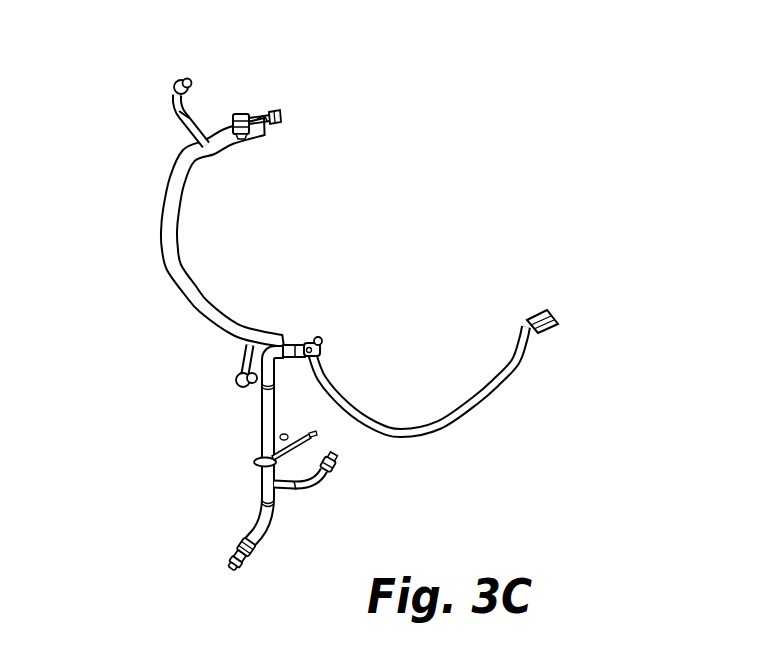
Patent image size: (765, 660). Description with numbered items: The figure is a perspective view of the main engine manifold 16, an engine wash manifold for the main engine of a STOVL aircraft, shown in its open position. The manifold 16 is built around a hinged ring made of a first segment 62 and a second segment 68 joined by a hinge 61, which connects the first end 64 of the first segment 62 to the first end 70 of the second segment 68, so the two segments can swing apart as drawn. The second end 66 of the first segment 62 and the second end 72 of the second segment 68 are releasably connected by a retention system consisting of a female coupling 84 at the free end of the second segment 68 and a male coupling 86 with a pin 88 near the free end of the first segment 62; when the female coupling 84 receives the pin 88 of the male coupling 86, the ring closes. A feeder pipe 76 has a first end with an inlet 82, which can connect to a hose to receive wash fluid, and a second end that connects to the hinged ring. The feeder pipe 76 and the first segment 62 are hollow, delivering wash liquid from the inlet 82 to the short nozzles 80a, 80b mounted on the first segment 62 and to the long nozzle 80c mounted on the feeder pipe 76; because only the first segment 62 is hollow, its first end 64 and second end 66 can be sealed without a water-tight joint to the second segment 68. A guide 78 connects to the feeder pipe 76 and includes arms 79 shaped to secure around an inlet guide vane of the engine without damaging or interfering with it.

The main engine manifold 16 is at (395, 101).
The hinge 61 is at (319, 334).
The first segment 62 is at (163, 272).
The first end 64 is at (294, 344).
The second end 66 is at (226, 147).
The second segment 68 is at (426, 438).
The first end 70 is at (322, 365).
The second end 72 is at (537, 348).
The feeder pipe 76 is at (263, 414).
The guide 78 is at (256, 462).
The arms 79 is at (283, 433).
The nozzle 80a is at (178, 79).
The nozzle 80b is at (248, 384).
The nozzle 80c is at (337, 475).
The inlet 82 is at (240, 566).
The female coupling 84 is at (541, 303).
The male coupling 86 is at (259, 101).
The pin 88 is at (256, 124).